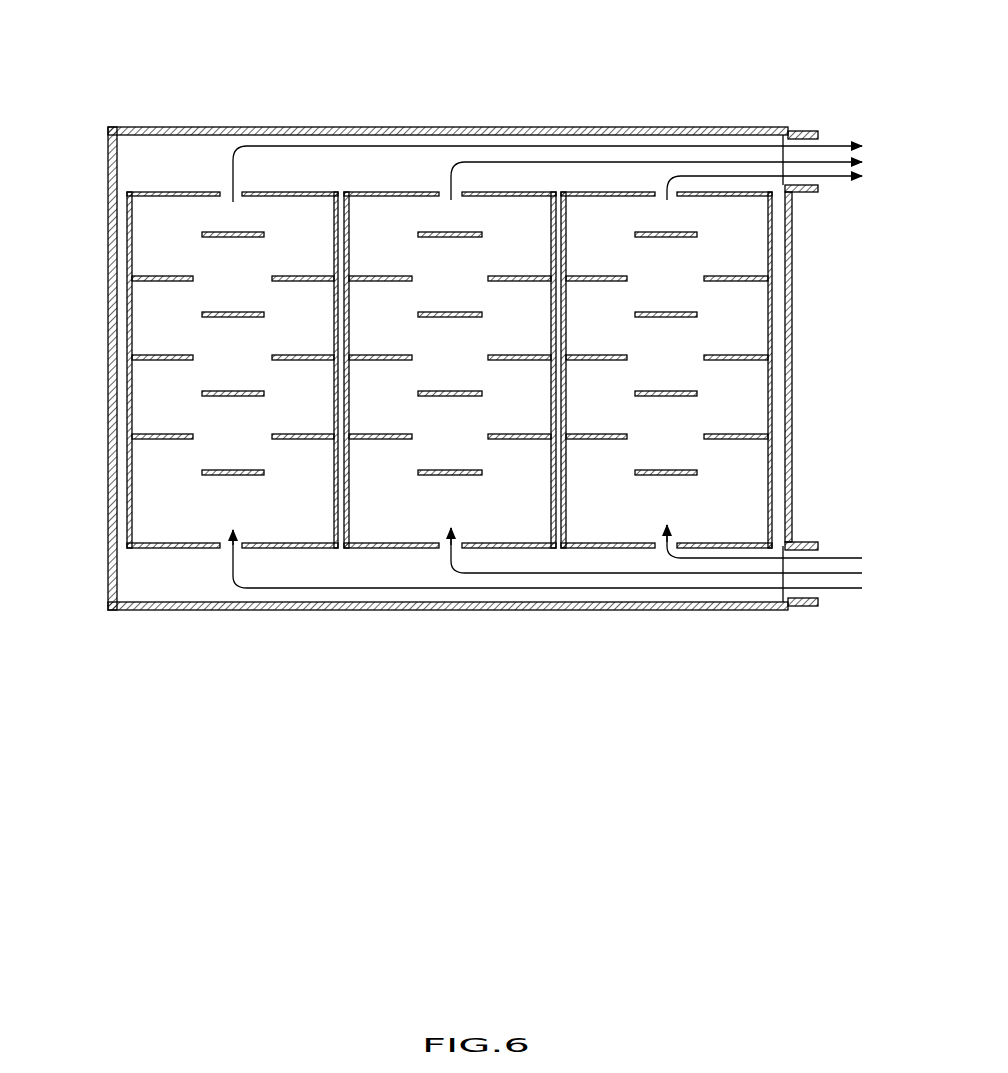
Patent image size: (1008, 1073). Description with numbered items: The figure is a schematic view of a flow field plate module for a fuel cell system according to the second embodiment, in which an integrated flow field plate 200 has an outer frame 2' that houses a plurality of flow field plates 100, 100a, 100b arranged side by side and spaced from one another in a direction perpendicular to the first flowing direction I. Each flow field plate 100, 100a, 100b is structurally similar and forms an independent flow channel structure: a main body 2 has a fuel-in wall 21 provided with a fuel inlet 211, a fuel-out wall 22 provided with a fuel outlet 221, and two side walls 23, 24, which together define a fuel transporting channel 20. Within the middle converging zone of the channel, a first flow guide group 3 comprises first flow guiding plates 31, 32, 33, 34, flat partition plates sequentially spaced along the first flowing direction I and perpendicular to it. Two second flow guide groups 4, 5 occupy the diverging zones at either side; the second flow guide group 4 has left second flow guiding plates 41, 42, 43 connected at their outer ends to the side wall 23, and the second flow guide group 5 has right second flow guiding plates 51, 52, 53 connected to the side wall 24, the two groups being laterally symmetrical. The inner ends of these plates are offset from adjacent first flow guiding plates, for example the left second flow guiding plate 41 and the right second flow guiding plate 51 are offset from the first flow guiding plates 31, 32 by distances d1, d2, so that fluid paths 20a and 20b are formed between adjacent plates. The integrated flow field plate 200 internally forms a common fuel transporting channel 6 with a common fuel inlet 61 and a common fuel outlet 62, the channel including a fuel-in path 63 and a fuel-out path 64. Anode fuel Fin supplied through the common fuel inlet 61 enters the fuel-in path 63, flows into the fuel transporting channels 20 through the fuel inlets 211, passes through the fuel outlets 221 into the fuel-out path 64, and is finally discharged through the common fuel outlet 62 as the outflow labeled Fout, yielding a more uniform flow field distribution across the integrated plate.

The flow field plate 100 is at (225, 354).
The flow field plate 100a is at (403, 181).
The flow field plate 100b is at (620, 184).
The common fuel transporting channel 6 is at (200, 159).
The main body 2 is at (423, 368).
The outer frame 2' is at (434, 368).
The integrated flow field plate 200 is at (796, 327).
The fuel transporting channel 20 is at (225, 376).
The fluid path 20a is at (204, 282).
The fluid path 20b is at (263, 282).
The fuel-in wall 21 is at (320, 548).
The fuel inlet 211 is at (250, 586).
The fuel-out wall 22 is at (305, 192).
The fuel outlet 221 is at (235, 152).
The side wall 23 is at (128, 266).
The side wall 24 is at (340, 205).
The first flow guide group 3 is at (227, 399).
The first flow guiding plate 31 is at (238, 470).
The first flow guiding plate 32 is at (238, 391).
The first flow guiding plate 33 is at (238, 312).
The first flow guiding plate 34 is at (275, 227).
The second flow guide group 4 is at (162, 381).
The left second flow guiding plate 41 is at (165, 434).
The left second flow guiding plate 42 is at (165, 355).
The left second flow guiding plate 43 is at (165, 276).
The second flow guide group 5 is at (303, 381).
The right second flow guiding plate 51 is at (305, 434).
The right second flow guiding plate 52 is at (305, 355).
The right second flow guiding plate 53 is at (305, 276).
The common fuel inlet 61 is at (818, 548).
The common fuel outlet 62 is at (818, 136).
The fuel-in path 63 is at (408, 606).
The fuel-out path 64 is at (507, 140).
The distance d1 is at (76, 433).
The distance d2 is at (85, 396).
The anode fuel Fin is at (852, 590).
The fluid outflow Fout is at (838, 181).
The first flowing direction I is at (320, 3).